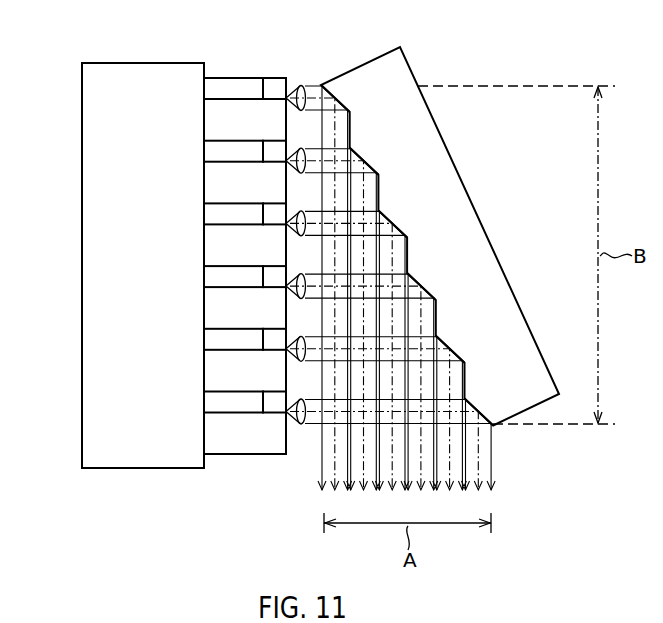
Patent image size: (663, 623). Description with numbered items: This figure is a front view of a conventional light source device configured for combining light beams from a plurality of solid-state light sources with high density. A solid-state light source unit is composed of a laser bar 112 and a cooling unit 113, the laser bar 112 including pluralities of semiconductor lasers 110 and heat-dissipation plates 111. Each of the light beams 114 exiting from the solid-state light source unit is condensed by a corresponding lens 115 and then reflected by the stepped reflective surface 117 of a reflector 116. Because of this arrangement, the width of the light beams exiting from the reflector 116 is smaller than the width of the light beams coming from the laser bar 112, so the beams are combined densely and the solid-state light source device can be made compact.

The semiconductor laser 110 is at (273, 337).
The heat-dissipation plate 111 is at (235, 367).
The laser bar 112 is at (308, 514).
The cooling unit 113 is at (93, 268).
The light beam 114 is at (293, 88).
The lens 115 is at (300, 84).
The reflector 116 is at (482, 232).
The stepped reflective surface 117 is at (336, 90).